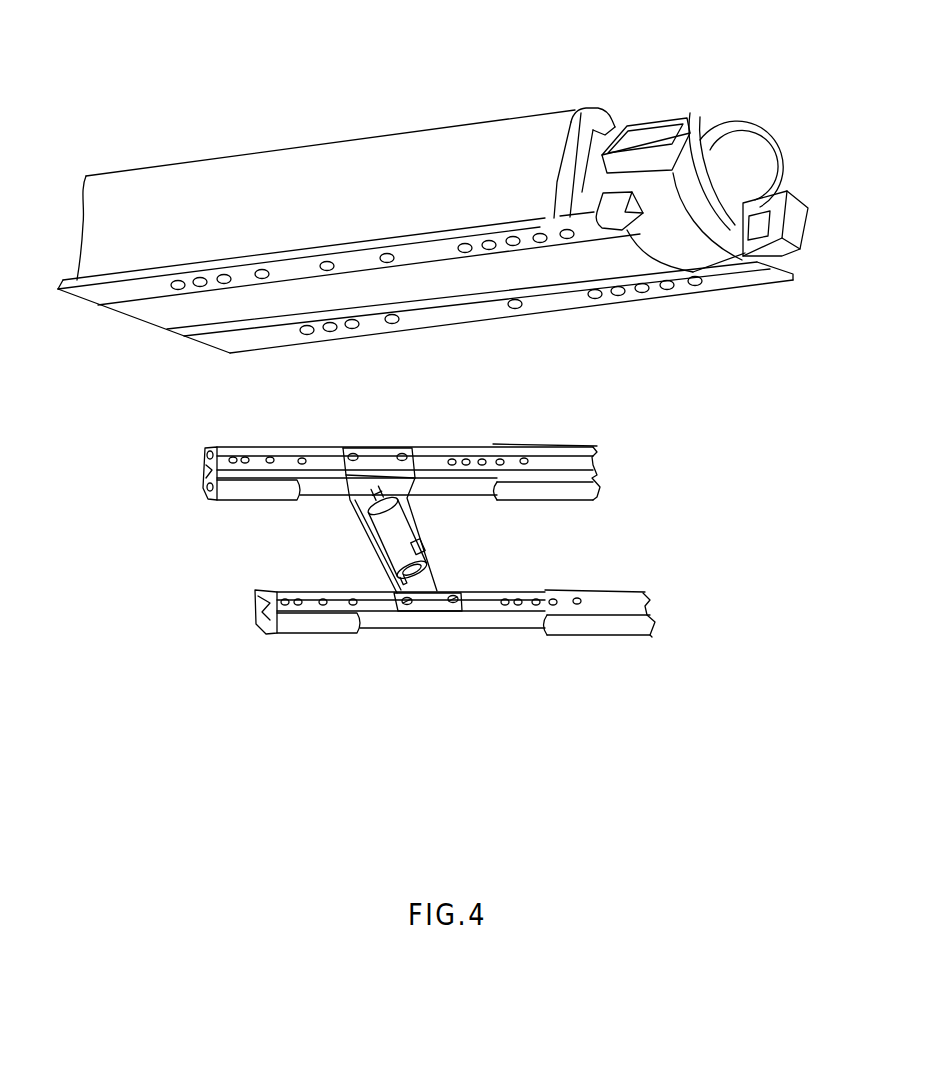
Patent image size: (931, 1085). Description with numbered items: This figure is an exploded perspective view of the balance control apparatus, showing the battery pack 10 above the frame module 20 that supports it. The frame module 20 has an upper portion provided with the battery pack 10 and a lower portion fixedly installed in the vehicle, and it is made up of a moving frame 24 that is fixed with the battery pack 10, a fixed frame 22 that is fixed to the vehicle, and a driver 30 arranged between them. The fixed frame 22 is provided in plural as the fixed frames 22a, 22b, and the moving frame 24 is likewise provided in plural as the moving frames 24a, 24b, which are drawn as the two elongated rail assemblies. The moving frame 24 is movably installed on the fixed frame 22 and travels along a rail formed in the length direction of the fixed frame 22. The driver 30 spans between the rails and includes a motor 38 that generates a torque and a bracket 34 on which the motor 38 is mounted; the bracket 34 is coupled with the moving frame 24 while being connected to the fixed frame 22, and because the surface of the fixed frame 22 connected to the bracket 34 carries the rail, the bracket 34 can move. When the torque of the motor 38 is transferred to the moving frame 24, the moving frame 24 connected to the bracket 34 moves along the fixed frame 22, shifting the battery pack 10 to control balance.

The battery pack 10 is at (645, 92).
The frame module 20 is at (593, 427).
The fixed frame 22 is at (697, 502).
The fixed frame 22a is at (593, 493).
The fixed frame 22b is at (635, 592).
The moving frame 24 is at (145, 520).
The moving frame 24a is at (252, 462).
The moving frame 24b is at (250, 598).
The driver 30 is at (356, 538).
The bracket 34 is at (428, 602).
The motor 38 is at (405, 536).